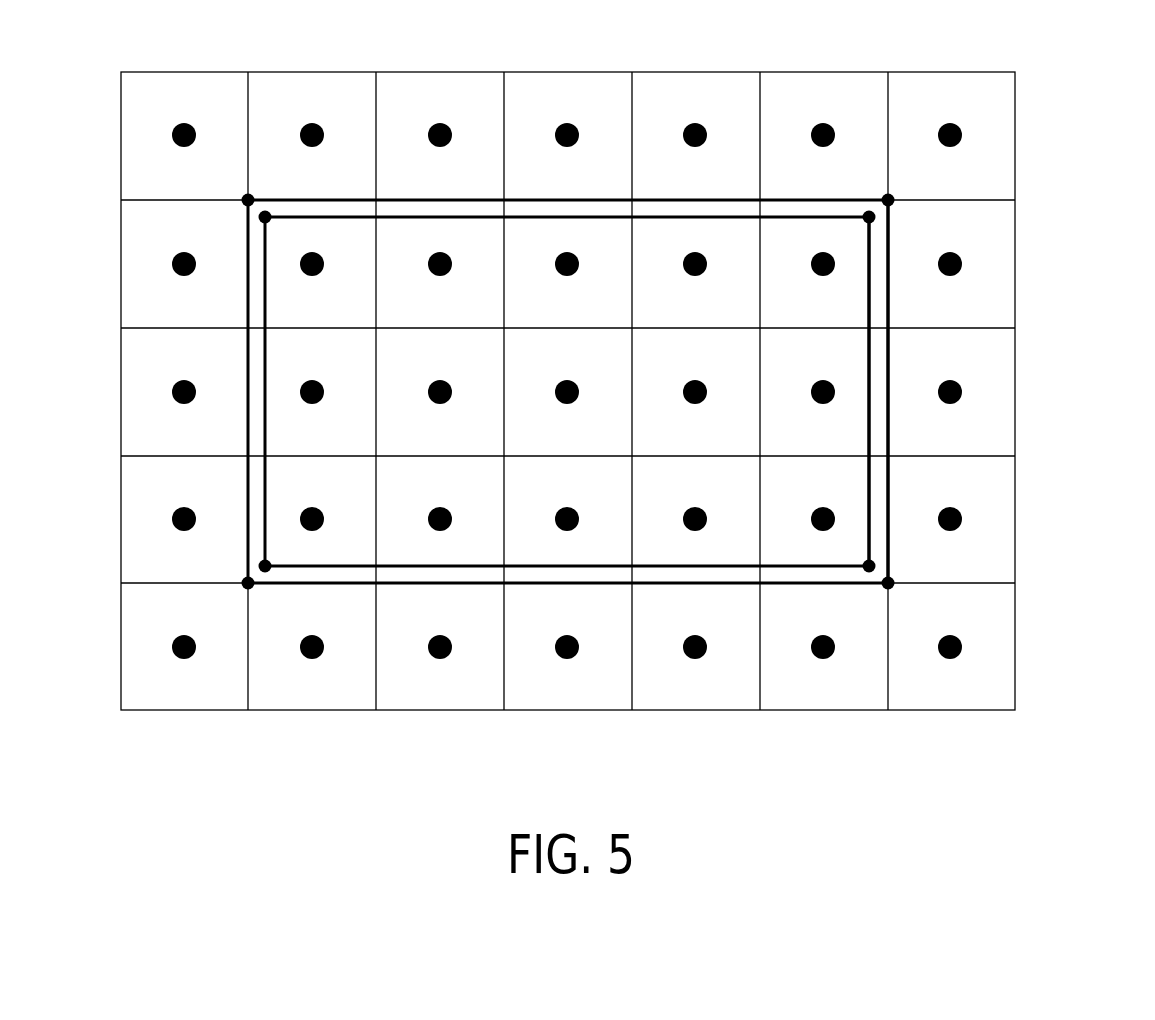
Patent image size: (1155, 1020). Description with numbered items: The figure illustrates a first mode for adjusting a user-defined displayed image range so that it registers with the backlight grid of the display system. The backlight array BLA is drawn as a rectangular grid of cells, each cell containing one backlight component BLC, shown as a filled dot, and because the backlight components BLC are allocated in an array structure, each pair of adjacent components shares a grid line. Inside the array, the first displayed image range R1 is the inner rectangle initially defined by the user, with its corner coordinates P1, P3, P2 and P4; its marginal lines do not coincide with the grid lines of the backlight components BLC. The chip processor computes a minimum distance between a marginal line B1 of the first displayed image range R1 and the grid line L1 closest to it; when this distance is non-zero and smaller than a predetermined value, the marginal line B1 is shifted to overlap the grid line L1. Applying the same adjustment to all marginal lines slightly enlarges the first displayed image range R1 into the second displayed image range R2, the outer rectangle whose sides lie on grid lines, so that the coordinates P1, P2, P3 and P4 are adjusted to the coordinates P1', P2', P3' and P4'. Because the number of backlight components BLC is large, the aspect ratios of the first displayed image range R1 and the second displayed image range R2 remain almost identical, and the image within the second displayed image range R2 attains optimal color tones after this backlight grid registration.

The backlight array BLA is at (967, 72).
The backlight component BLC is at (962, 644).
The first displayed image range R1 is at (265, 310).
The second displayed image range R2 is at (248, 352).
The marginal line B1 is at (870, 305).
The grid line L1 is at (888, 345).
The coordinate P1 is at (280, 230).
The coordinate P2 is at (856, 552).
The coordinate P3 is at (856, 230).
The coordinate P4 is at (281, 552).
The coordinate P1' is at (231, 187).
The coordinate P2' is at (906, 598).
The coordinate P3' is at (906, 187).
The coordinate P4' is at (231, 598).